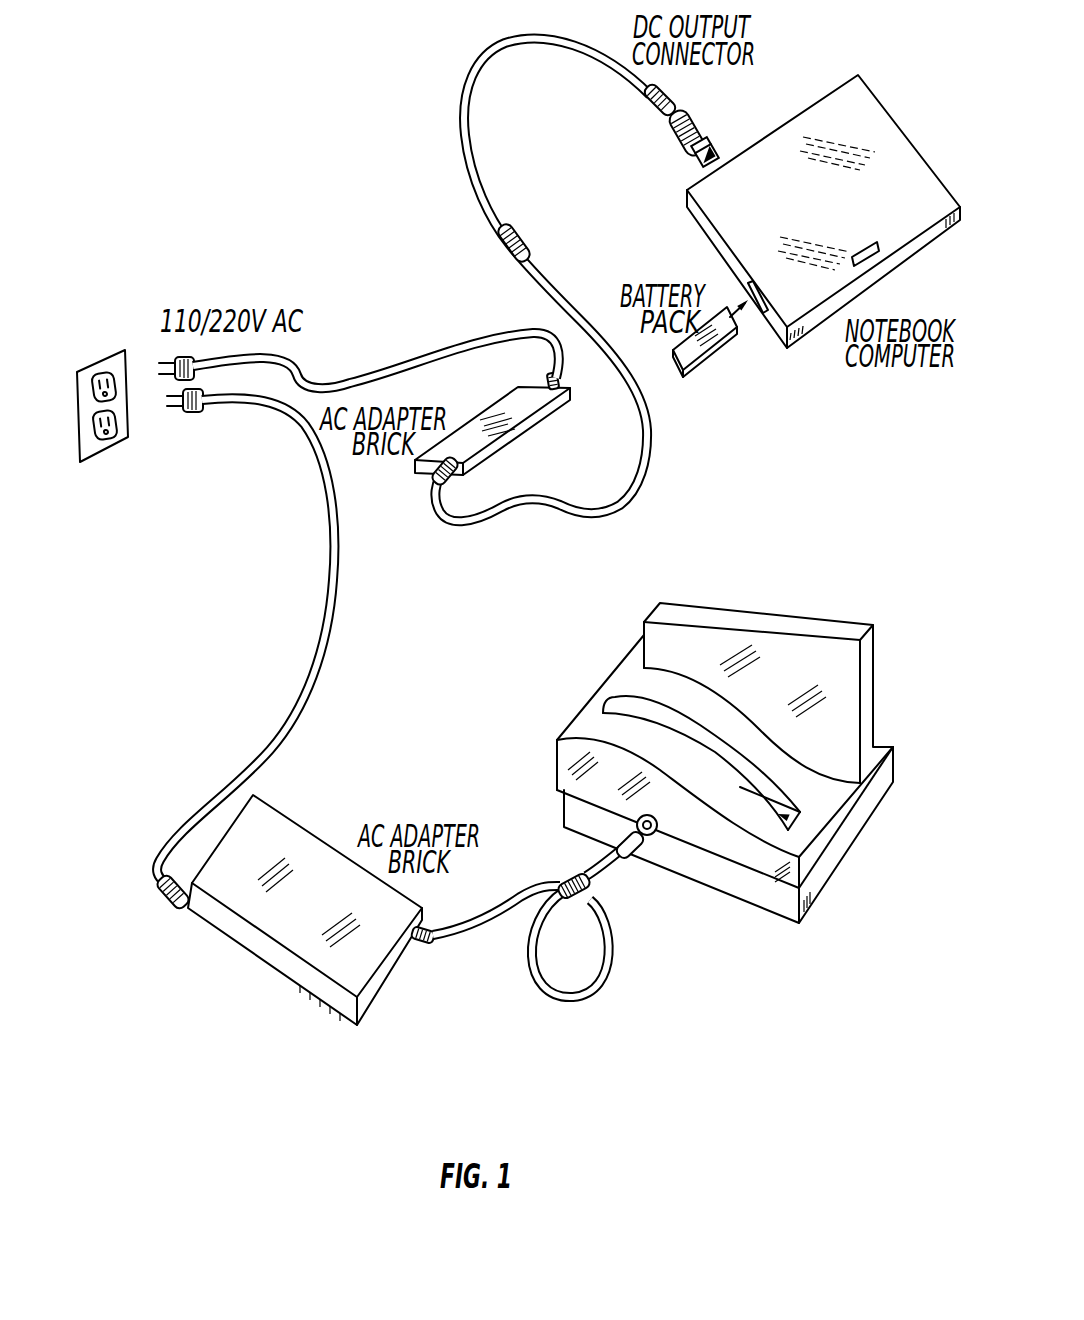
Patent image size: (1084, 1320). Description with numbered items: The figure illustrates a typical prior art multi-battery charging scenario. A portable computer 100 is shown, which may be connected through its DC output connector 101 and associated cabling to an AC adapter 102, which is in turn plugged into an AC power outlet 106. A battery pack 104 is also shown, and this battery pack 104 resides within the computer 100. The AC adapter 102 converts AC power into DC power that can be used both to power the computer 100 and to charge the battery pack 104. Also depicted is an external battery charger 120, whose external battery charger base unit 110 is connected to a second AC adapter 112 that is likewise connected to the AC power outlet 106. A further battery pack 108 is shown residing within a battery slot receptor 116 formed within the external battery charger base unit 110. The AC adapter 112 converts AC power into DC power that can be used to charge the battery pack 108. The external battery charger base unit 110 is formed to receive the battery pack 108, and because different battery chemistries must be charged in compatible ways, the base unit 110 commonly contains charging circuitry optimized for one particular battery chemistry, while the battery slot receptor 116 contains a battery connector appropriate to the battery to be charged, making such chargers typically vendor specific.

The portable computer 100 is at (900, 127).
The DC output connector 101 is at (693, 152).
The AC adapter 102 is at (423, 473).
The battery pack 104 is at (700, 365).
The AC power outlet 106 is at (110, 447).
The battery pack 108 is at (773, 613).
The external battery charger base unit 110 is at (817, 870).
The AC adapter 112 is at (302, 827).
The battery slot receptor 116 is at (797, 820).
The external battery charger 120 is at (692, 745).